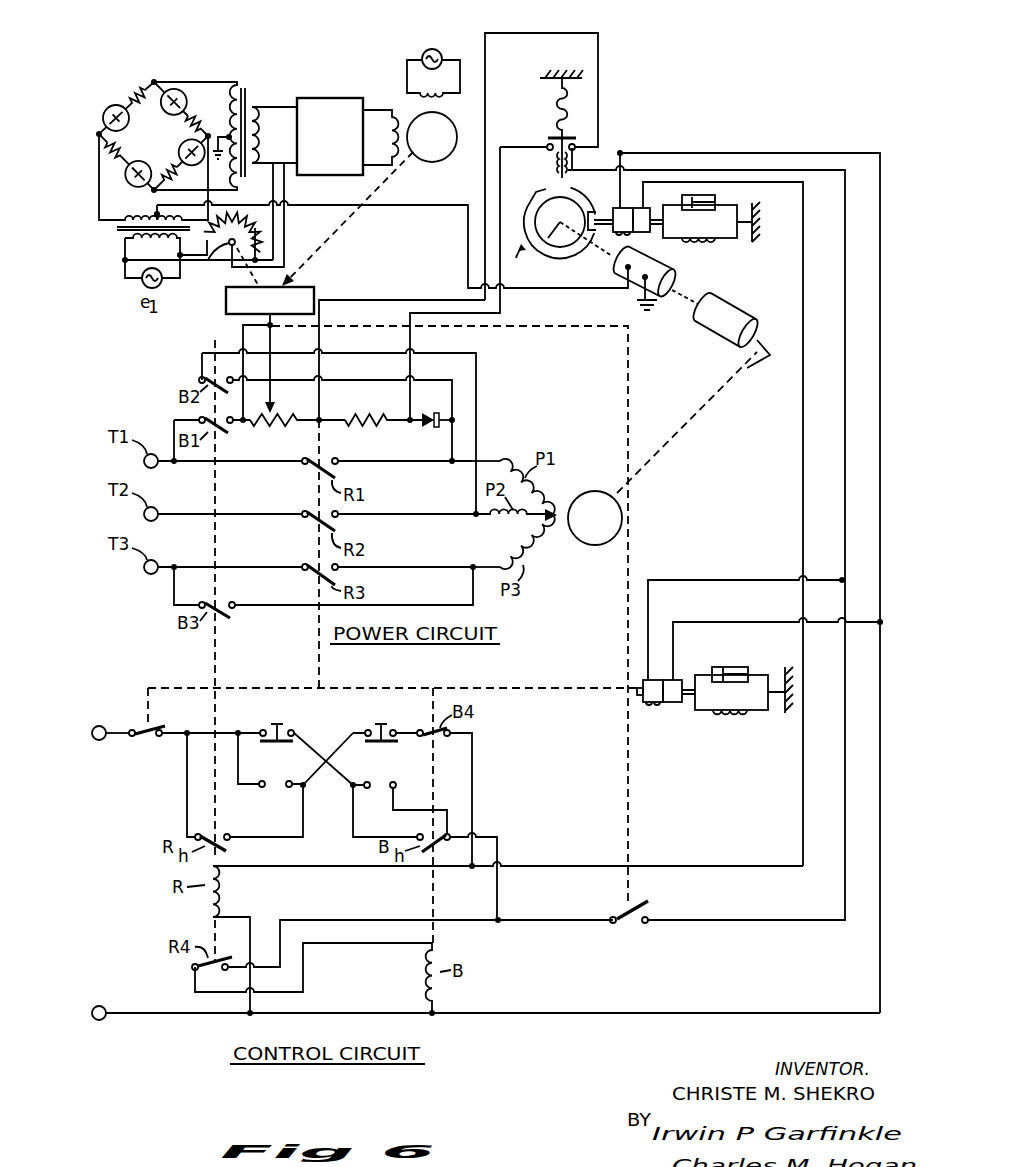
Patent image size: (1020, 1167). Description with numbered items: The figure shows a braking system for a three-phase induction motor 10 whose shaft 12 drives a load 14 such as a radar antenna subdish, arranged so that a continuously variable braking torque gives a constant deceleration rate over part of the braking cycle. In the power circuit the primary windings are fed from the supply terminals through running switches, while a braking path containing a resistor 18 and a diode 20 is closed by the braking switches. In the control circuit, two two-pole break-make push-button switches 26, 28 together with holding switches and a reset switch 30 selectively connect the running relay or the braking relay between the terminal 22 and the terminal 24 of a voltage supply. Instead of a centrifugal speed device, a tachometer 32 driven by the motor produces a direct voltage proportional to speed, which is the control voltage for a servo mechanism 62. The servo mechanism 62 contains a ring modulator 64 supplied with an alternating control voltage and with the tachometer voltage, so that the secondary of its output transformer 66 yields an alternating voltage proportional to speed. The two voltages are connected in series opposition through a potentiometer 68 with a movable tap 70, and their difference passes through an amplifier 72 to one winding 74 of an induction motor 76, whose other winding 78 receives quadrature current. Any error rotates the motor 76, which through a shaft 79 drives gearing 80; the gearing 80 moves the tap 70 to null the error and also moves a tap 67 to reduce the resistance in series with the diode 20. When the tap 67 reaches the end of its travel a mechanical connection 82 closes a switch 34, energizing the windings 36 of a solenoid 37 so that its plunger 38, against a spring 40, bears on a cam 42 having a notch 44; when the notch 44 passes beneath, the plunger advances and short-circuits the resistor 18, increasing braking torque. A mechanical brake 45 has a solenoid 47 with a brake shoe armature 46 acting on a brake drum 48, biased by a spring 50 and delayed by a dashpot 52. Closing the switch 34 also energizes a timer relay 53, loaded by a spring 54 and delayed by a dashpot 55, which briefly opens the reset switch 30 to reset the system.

The servo mechanism 62 is at (400, 35).
The ring modulator 64 is at (198, 126).
The output transformer 66 is at (253, 106).
The potentiometer 68 is at (238, 197).
The movable tap 70 is at (197, 249).
The amplifier 72 is at (327, 176).
The winding 74 is at (401, 118).
The induction motor 76 is at (450, 158).
The other winding 78 is at (445, 97).
The shaft 79 is at (340, 235).
The gearing 80 is at (226, 301).
The spring 40 is at (556, 105).
The solenoid 37 is at (546, 137).
The windings 36 is at (548, 151).
The plunger 38 is at (556, 172).
The notch 44 is at (530, 206).
The cam 42 is at (533, 240).
The brake drum 48 is at (552, 263).
The solenoid 47 is at (606, 236).
The brake shoe armature 46 is at (596, 210).
The mechanical brake 45 is at (656, 225).
The dashpot 52 is at (730, 213).
The spring 50 is at (710, 244).
The tachometer 32 is at (676, 267).
The load 14 is at (738, 306).
The shaft 12 is at (707, 408).
The mechanical connection 82 is at (626, 376).
The three-phase induction motor 10 is at (580, 492).
The tap 67 is at (279, 392).
The resistor 18 is at (360, 413).
The diode 20 is at (438, 429).
The terminal 22 is at (101, 740).
The switch 30 is at (138, 724).
The push-button switch 26 is at (272, 742).
The push-button switch 28 is at (382, 742).
The terminal 24 is at (103, 1005).
The switch 34 is at (642, 900).
The timer relay 53 is at (646, 704).
The spring 54 is at (727, 714).
The dashpot 55 is at (730, 667).